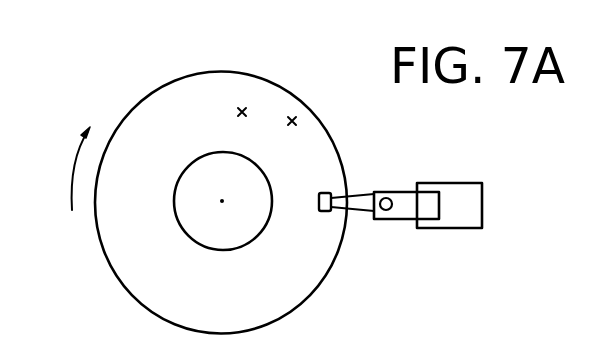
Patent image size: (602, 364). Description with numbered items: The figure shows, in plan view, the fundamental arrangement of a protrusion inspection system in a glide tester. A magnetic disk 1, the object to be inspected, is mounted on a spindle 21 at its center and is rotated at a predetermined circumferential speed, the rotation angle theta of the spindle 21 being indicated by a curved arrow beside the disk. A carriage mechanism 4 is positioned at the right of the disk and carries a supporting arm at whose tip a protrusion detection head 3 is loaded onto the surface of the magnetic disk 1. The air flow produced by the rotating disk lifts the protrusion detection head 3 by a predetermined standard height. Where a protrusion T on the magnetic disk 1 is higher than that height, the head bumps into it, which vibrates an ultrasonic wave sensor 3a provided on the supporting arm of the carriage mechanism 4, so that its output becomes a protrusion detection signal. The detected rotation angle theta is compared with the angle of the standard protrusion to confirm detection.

The magnetic disk 1 is at (139, 103).
The spindle 21 is at (215, 167).
The protrusion T is at (243, 107).
The protrusion detection head 3 is at (323, 192).
The ultrasonic wave sensor 3a is at (387, 198).
The carriage mechanism 4 is at (468, 192).
The rotation angle theta is at (77, 185).